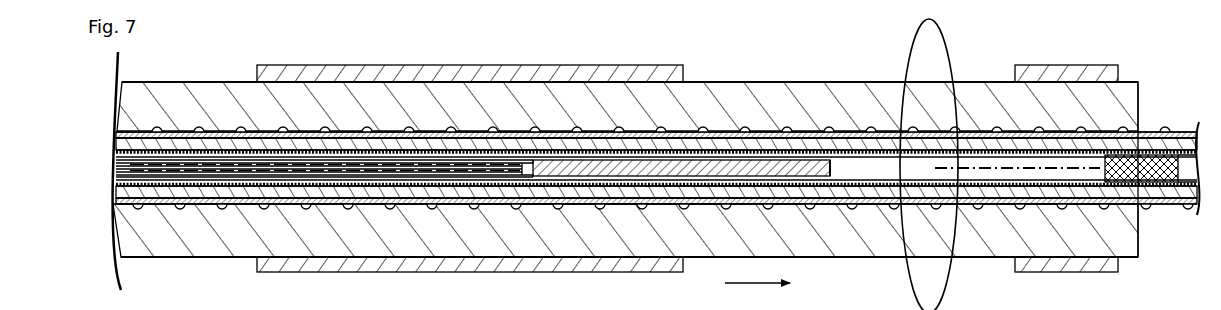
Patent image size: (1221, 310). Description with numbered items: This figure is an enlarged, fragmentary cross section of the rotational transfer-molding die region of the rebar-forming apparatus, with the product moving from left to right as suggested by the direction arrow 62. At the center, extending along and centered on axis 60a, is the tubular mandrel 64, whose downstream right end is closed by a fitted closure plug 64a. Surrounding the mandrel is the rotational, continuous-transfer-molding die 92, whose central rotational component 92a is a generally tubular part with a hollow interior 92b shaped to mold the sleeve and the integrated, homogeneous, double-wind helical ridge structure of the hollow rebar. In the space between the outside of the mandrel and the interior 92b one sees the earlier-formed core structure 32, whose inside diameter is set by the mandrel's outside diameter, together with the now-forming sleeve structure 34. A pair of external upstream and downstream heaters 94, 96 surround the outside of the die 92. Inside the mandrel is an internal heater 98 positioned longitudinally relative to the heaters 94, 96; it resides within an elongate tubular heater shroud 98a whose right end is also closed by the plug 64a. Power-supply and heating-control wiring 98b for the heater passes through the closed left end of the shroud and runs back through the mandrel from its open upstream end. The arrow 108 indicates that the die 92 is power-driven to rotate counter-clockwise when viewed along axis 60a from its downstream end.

The rotational continuous-transfer-molding die 92 is at (781, 62).
The central rotational component 92a is at (690, 97).
The hollow interior 92b is at (962, 137).
The upstream heater 94 is at (343, 62).
The downstream heater 96 is at (1043, 61).
The sleeve structure 34 is at (521, 131).
The core structure 32 is at (431, 143).
The tubular mandrel 64 is at (176, 153).
The closure plug 64a is at (1133, 166).
The internal heater 98 is at (709, 163).
The heater shroud 98a is at (832, 178).
The power-supply and heating-control wiring 98b is at (250, 178).
The axis 60a is at (1032, 170).
The rotational-direction arrow 108 is at (951, 51).
The direction arrow 62 is at (750, 282).